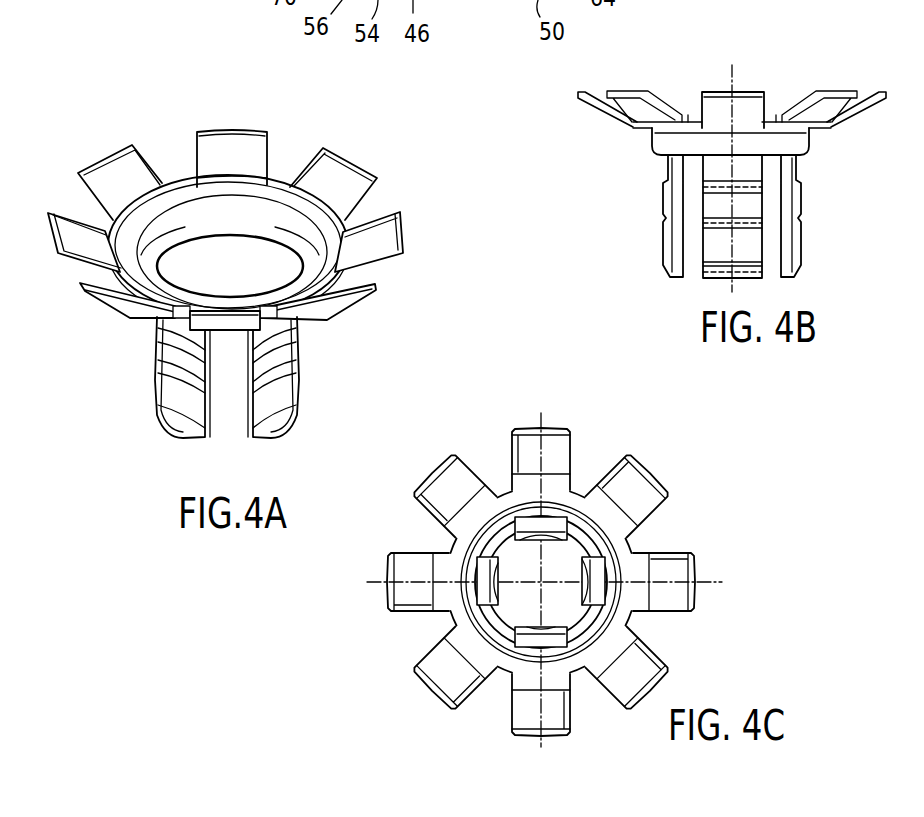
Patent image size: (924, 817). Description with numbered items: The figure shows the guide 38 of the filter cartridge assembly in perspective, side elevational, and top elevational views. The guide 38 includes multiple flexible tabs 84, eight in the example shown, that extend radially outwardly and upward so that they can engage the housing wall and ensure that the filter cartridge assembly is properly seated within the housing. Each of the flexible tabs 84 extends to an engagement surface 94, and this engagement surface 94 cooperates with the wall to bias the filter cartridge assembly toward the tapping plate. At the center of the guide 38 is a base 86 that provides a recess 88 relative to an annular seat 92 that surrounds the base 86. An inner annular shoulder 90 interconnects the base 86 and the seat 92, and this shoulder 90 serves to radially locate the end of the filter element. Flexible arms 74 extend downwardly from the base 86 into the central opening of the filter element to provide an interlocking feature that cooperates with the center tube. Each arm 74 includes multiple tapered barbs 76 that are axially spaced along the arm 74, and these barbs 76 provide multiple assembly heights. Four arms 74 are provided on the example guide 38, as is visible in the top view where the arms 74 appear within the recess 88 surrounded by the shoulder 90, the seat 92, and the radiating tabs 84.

In FIG. 4A, the guide 38 is at (234, 105).
In FIG. 4B, the guide 38 is at (708, 68).
In FIG. 4C, the guide 38 is at (682, 462).
In FIG. 4A, the flexible arms 74 is at (267, 410).
In FIG. 4B, the flexible arms 74 is at (716, 247).
In FIG. 4C, the flexible arms 74 is at (490, 600).
In FIG. 4A, the tapered barbs 76 is at (297, 410).
In FIG. 4A, the flexible tabs 84 is at (380, 224).
In FIG. 4B, the flexible tabs 84 is at (828, 107).
In FIG. 4C, the flexible tabs 84 is at (685, 566).
In FIG. 4A, the base 86 is at (190, 186).
In FIG. 4B, the base 86 is at (693, 121).
In FIG. 4C, the base 86 is at (580, 673).
In FIG. 4A, the recess 88 is at (233, 220).
In FIG. 4A, the inner annular shoulder 90 is at (297, 238).
In FIG. 4B, the inner annular shoulder 90 is at (800, 138).
In FIG. 4C, the inner annular shoulder 90 is at (500, 623).
In FIG. 4A, the annular seat 92 is at (333, 250).
In FIG. 4B, the annular seat 92 is at (652, 128).
In FIG. 4C, the annular seat 92 is at (630, 597).
In FIG. 4A, the engagement surface 94 is at (408, 236).